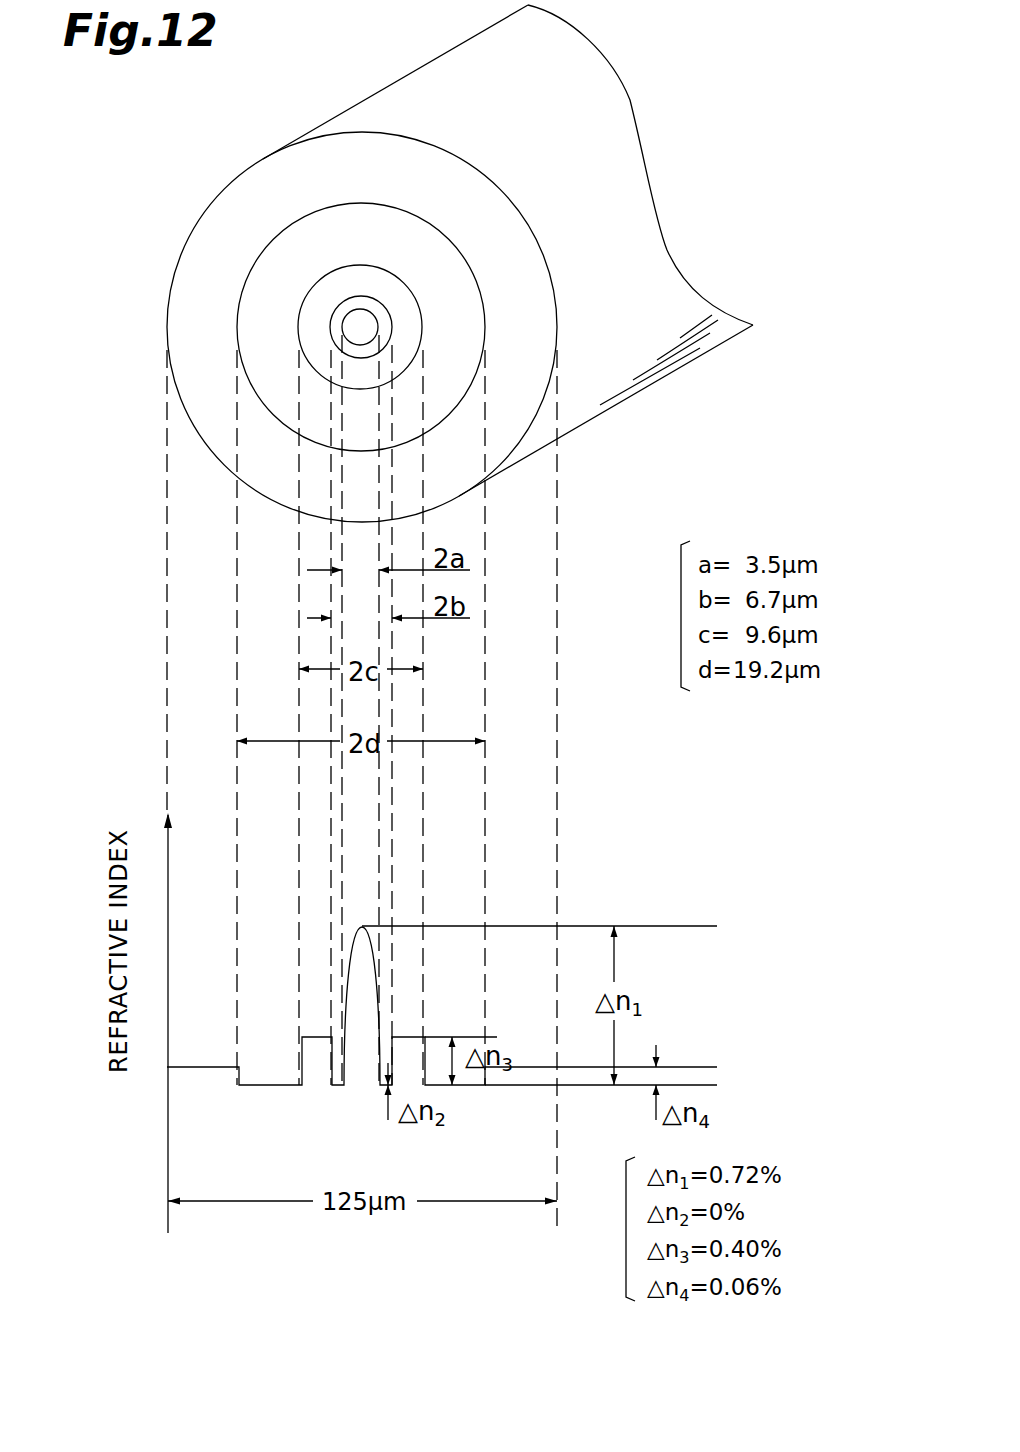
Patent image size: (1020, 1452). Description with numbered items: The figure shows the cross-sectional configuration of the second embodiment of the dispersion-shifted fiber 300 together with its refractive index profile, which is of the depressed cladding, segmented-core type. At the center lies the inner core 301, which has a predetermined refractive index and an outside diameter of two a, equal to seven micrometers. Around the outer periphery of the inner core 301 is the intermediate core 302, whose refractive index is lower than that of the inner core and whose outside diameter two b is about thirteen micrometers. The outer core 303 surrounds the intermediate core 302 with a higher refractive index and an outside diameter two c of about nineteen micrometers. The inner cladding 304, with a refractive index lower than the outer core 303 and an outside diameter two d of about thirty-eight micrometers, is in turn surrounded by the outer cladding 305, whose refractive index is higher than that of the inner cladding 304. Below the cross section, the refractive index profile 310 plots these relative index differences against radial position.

The dispersion-shifted fiber 300 is at (634, 254).
The inner core 301 is at (353, 332).
The intermediate core 302 is at (343, 312).
The outer core 303 is at (327, 287).
The inner cladding 304 is at (333, 220).
The outer cladding 305 is at (372, 153).
The refractive index profile 310 is at (180, 1067).